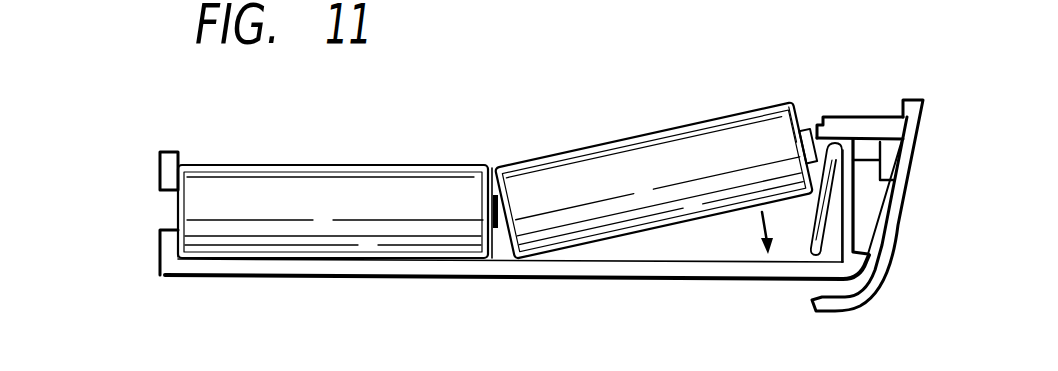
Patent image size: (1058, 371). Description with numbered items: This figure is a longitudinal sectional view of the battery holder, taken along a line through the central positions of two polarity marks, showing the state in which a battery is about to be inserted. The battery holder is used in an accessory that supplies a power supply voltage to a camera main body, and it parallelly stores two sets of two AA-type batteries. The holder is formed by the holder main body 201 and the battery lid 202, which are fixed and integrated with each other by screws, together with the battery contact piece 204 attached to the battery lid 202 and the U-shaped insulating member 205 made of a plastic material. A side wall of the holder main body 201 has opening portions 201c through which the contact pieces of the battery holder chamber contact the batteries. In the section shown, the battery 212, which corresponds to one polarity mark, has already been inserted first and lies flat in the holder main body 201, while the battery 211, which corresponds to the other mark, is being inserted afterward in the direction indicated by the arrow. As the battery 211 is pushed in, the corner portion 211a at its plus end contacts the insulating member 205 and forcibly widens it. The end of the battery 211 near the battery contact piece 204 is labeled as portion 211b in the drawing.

The holder main body 201 is at (560, 268).
The opening portion 201c is at (160, 230).
The battery lid 202 is at (872, 126).
The battery contact piece 204 is at (835, 130).
The U-shaped insulating member 205 is at (793, 238).
The battery 211 is at (618, 173).
The corner portion 211a is at (798, 100).
The battery terminal 211b is at (805, 125).
The battery 212 is at (287, 186).